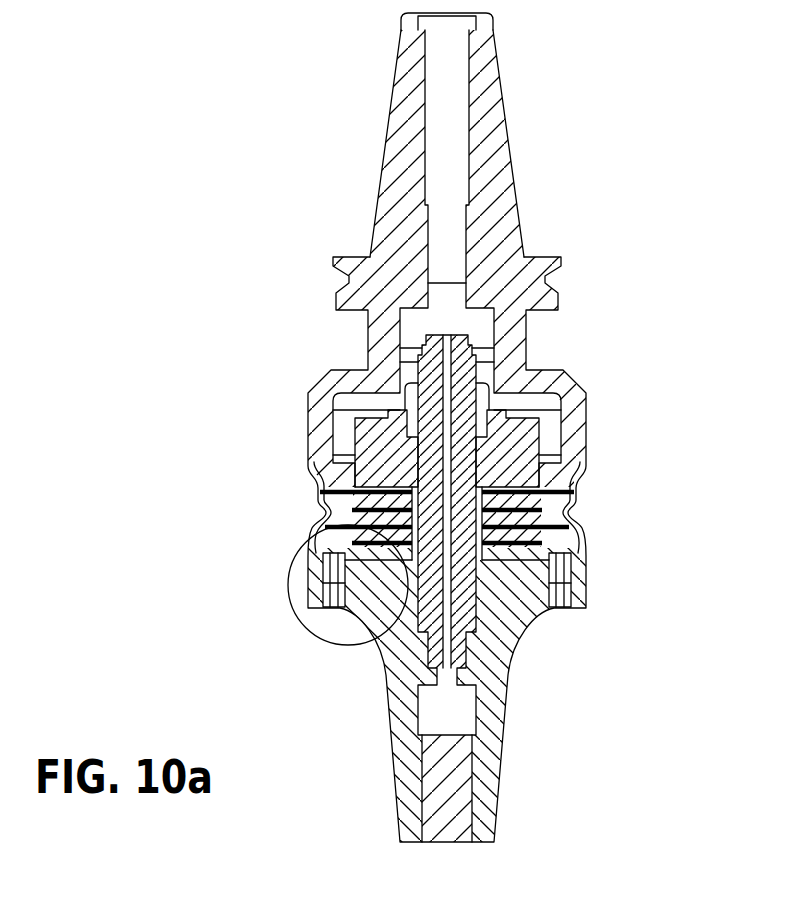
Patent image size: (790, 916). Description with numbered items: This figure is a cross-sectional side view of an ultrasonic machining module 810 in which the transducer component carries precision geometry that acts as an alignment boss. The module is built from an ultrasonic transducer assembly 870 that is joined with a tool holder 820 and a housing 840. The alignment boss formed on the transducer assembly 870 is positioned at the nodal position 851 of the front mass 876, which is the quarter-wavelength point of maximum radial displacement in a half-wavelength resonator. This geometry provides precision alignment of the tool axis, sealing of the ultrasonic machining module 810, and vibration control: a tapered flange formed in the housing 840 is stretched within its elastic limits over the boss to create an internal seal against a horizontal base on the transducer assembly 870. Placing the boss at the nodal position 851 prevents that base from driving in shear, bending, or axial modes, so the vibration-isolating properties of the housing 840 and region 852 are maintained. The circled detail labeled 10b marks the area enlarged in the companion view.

The ultrasonic machining module 810 is at (315, 101).
The tool holder 820 is at (520, 108).
The housing 840 is at (600, 428).
The region 852 is at (598, 518).
The nodal position 851 is at (292, 589).
The front mass 876 is at (372, 642).
The ultrasonic transducer assembly 870 is at (541, 644).
The detail view circle 10b is at (292, 549).